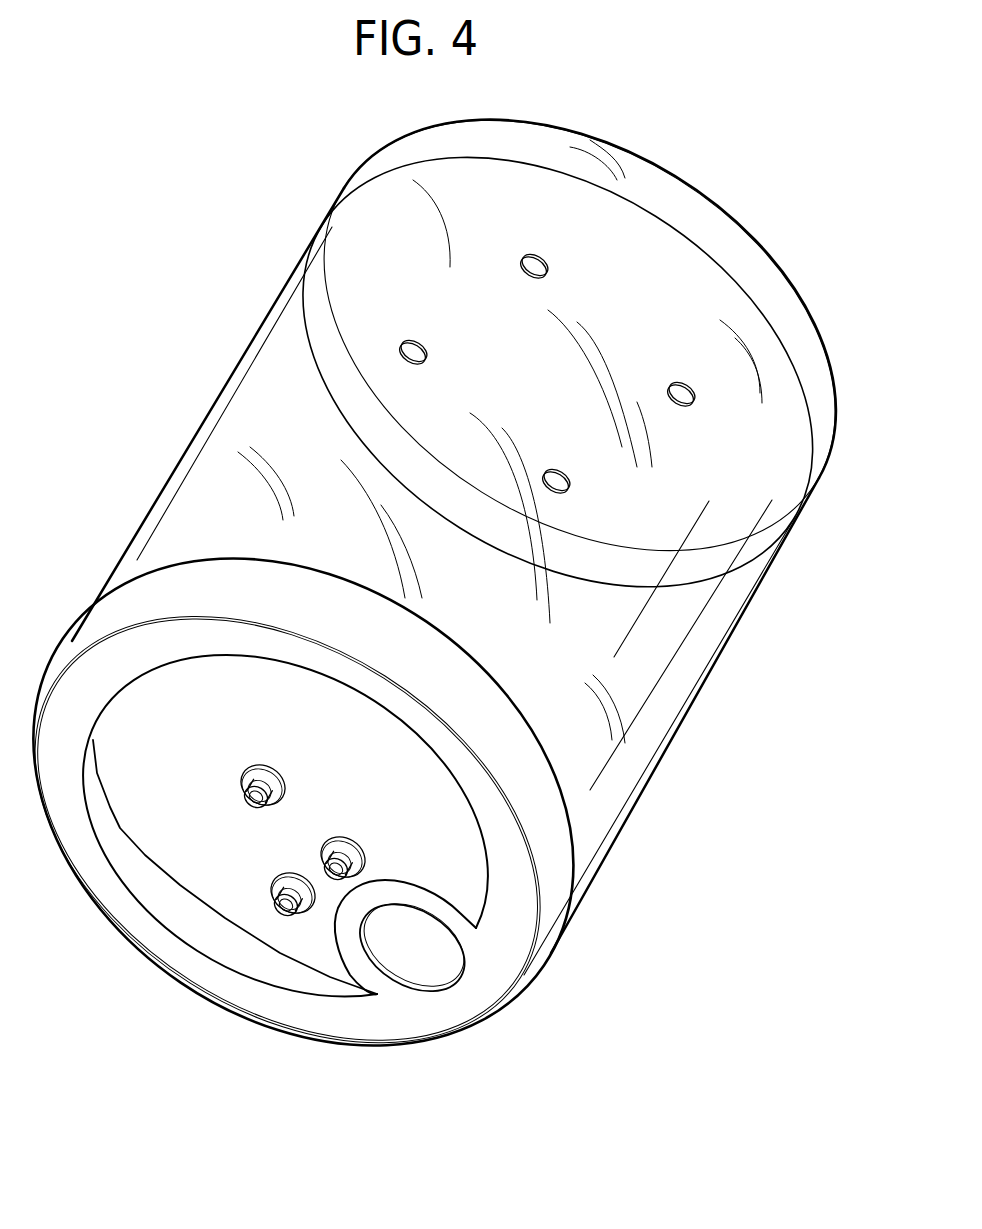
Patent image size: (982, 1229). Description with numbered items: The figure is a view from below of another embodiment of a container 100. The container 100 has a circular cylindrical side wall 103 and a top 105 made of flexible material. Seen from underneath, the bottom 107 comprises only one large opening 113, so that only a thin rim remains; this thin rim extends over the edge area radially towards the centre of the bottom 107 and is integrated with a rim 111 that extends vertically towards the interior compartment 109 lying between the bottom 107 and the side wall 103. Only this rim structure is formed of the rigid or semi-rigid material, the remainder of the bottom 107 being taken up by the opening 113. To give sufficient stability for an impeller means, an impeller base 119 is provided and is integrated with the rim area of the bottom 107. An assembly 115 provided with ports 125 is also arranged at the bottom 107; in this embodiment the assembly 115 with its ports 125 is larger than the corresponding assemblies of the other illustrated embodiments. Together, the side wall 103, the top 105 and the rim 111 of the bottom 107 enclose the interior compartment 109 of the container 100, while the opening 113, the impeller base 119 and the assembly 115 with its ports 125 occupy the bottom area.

The container 100 is at (692, 728).
The circular cylindrical side wall 103 is at (700, 643).
The top 105 is at (703, 278).
The bottom 107 is at (512, 905).
The interior compartment 109 is at (586, 733).
The rim 111 is at (567, 878).
The opening 113 is at (210, 854).
The assembly 115 is at (305, 937).
The impeller base 119 is at (442, 985).
The ports 125 is at (248, 803).